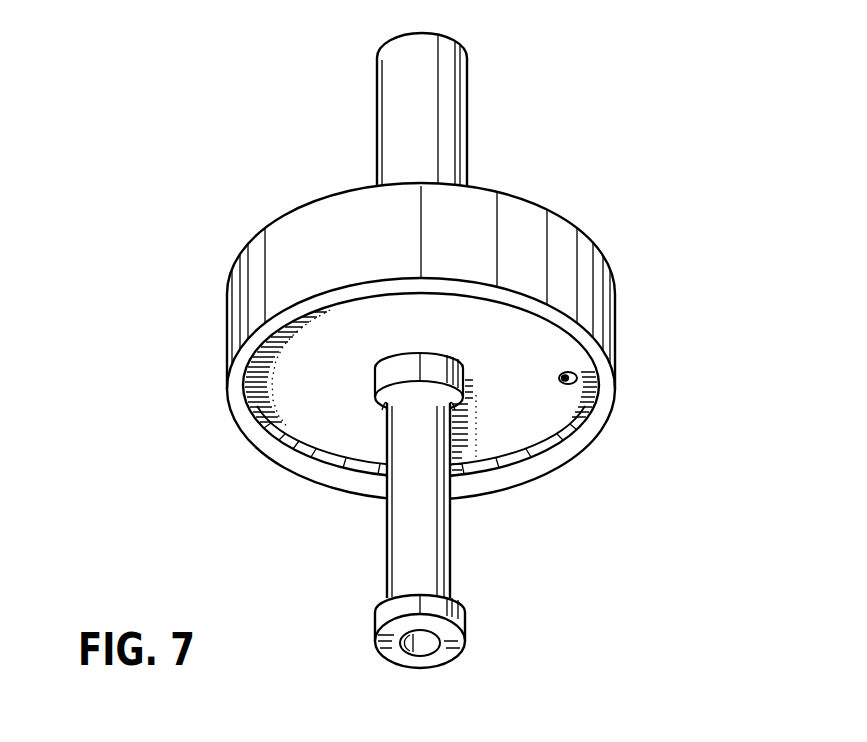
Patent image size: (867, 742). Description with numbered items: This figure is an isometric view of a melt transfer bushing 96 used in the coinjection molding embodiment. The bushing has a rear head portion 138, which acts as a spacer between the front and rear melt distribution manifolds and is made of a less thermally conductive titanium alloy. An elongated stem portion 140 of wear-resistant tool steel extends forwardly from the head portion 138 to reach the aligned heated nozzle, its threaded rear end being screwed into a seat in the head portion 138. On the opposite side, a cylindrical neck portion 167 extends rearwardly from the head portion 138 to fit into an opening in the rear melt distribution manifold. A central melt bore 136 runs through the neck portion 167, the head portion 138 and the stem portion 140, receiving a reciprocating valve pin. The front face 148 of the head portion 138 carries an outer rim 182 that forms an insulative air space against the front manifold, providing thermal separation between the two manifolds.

The melt transfer bushing 96 is at (402, 378).
The central melt bore 136 is at (421, 650).
The rear head portion 138 is at (586, 308).
The elongated stem portion 140 is at (424, 556).
The front face 148 is at (534, 436).
The cylindrical neck portion 167 is at (428, 110).
The outer rim 182 is at (593, 428).